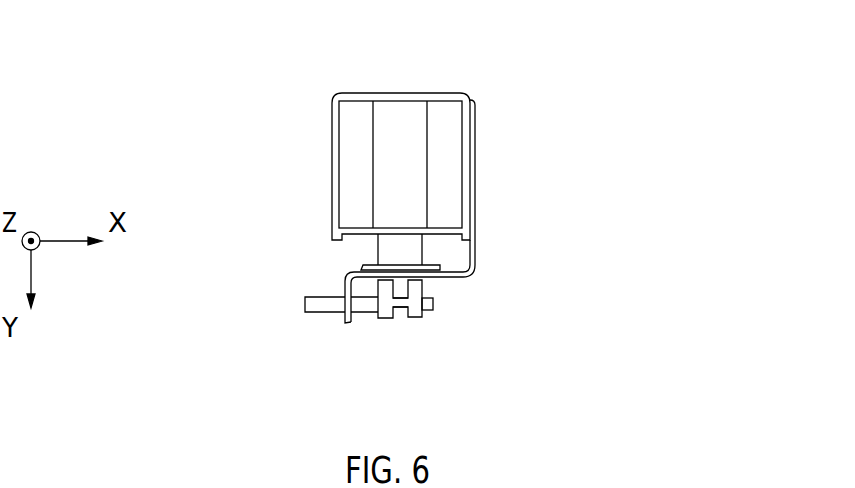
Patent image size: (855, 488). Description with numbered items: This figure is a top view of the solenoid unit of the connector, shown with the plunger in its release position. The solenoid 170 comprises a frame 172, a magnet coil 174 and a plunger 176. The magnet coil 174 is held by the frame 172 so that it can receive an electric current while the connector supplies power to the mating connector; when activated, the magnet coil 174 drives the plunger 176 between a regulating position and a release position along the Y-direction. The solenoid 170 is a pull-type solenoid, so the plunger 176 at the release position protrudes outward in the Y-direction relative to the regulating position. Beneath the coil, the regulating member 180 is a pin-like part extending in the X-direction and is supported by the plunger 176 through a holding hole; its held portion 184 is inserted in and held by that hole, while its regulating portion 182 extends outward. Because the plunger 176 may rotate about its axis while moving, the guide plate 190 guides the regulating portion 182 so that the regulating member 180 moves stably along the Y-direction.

The solenoid 170 is at (376, 210).
The frame 172 is at (332, 156).
The magnet coil 174 is at (400, 145).
The plunger 176 is at (420, 287).
The regulating member 180 is at (360, 312).
The regulating portion 182 is at (320, 312).
The held portion 184 is at (403, 312).
The guide plate 190 is at (347, 323).